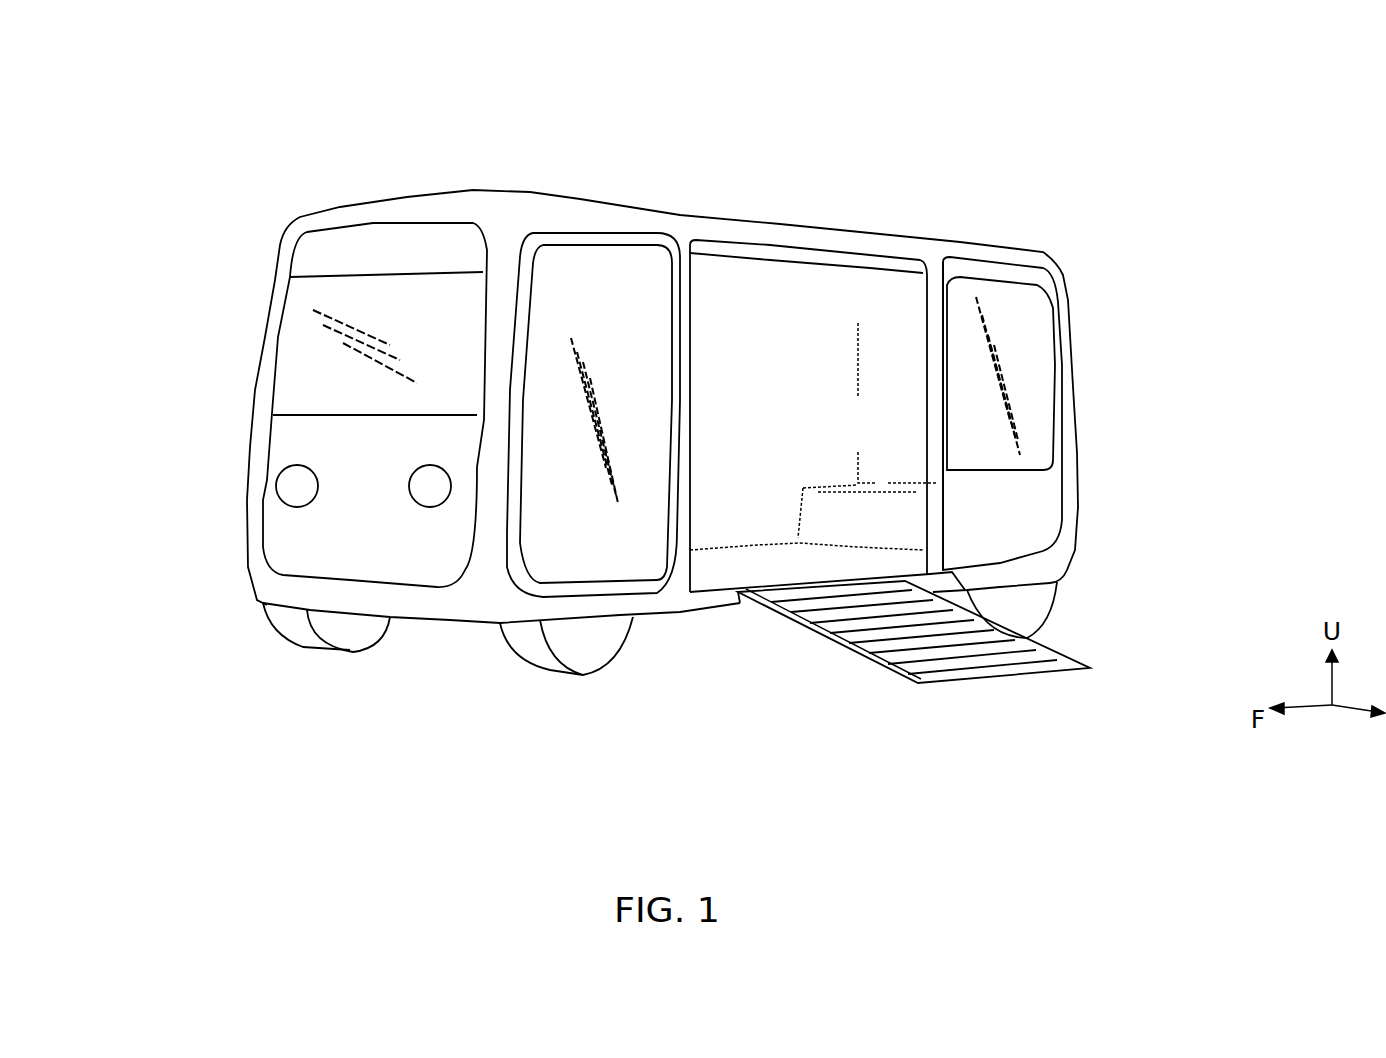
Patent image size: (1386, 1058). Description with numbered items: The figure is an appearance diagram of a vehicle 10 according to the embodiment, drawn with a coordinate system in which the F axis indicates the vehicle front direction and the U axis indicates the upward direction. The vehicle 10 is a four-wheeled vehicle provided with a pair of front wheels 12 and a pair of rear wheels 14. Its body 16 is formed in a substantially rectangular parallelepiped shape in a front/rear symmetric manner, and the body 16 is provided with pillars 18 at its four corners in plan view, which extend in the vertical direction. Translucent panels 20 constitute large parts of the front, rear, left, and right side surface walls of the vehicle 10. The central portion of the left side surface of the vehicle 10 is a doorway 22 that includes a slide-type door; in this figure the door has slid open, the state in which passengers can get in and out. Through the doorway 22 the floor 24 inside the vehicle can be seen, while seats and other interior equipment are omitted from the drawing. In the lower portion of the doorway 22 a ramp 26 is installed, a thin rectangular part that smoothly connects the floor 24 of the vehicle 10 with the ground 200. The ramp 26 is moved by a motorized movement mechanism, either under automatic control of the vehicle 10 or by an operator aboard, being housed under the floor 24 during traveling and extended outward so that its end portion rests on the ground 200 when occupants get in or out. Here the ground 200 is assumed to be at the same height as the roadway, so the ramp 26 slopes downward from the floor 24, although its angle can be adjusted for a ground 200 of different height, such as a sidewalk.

The vehicle 10 is at (772, 128).
The front wheels 12 is at (350, 643).
The rear wheels 14 is at (1053, 607).
The body 16 is at (265, 337).
The pillars 18 is at (277, 265).
The translucent panels 20 is at (302, 305).
The doorway 22 is at (803, 320).
The floor 24 is at (757, 576).
The ramp 26 is at (833, 630).
The ground 200 is at (1010, 739).